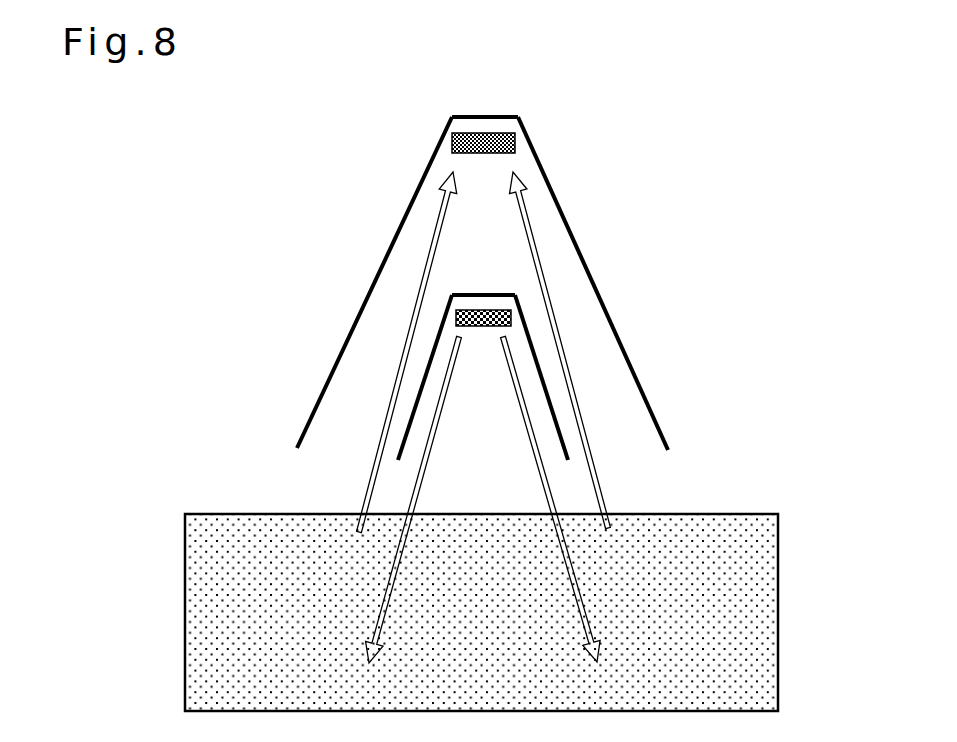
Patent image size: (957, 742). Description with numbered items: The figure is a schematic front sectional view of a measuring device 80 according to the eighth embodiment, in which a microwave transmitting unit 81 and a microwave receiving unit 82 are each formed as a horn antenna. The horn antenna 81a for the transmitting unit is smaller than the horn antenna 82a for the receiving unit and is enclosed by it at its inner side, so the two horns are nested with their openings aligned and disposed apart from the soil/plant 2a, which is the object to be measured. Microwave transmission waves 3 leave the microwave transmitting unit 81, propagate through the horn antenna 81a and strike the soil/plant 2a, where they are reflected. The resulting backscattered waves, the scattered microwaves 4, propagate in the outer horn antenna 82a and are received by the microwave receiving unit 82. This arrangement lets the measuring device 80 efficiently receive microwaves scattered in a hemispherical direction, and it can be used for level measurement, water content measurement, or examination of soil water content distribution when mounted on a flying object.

The measuring device 80 is at (429, 274).
The microwave receiving unit 82 is at (488, 133).
The horn antenna for the receiving unit 82a is at (417, 192).
The microwave transmitting unit 81 is at (487, 310).
The horn antenna for the transmitting unit 81a is at (445, 320).
The scattered microwaves 4 is at (405, 346).
The microwave transmission waves 3 is at (430, 458).
The soil/plant 2a is at (722, 514).